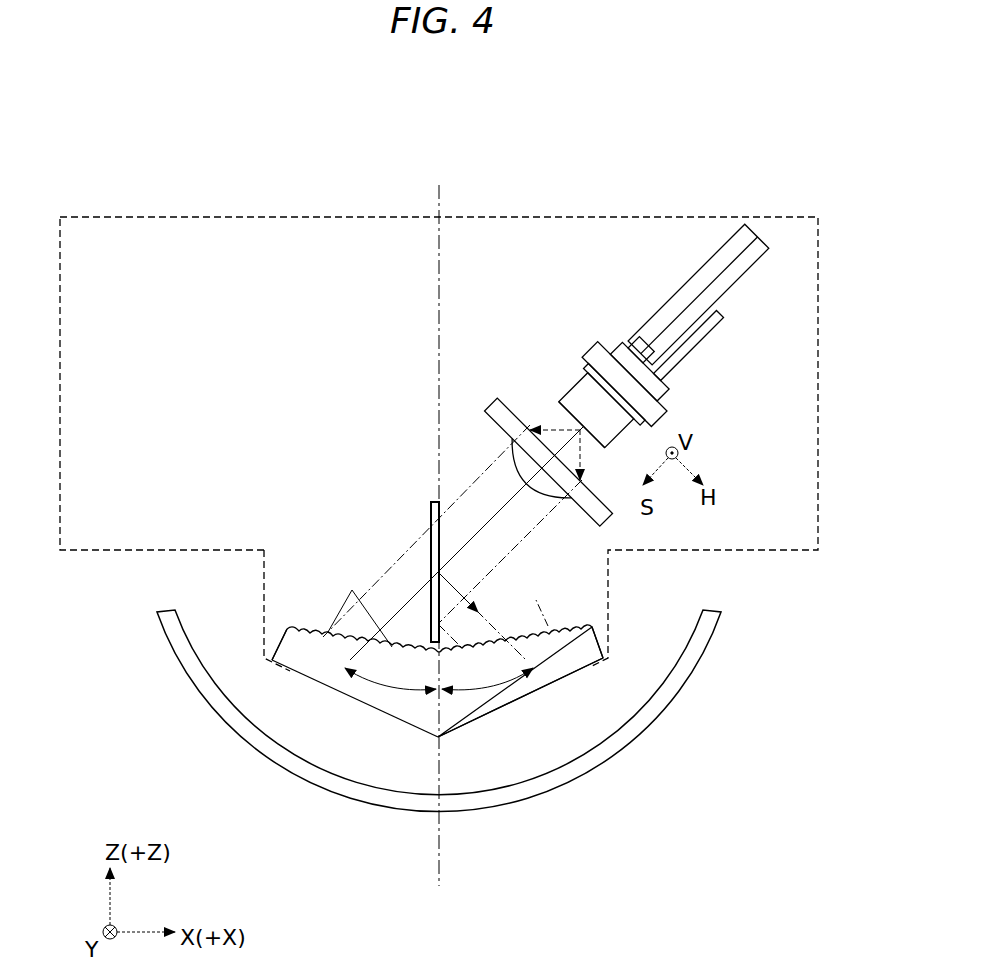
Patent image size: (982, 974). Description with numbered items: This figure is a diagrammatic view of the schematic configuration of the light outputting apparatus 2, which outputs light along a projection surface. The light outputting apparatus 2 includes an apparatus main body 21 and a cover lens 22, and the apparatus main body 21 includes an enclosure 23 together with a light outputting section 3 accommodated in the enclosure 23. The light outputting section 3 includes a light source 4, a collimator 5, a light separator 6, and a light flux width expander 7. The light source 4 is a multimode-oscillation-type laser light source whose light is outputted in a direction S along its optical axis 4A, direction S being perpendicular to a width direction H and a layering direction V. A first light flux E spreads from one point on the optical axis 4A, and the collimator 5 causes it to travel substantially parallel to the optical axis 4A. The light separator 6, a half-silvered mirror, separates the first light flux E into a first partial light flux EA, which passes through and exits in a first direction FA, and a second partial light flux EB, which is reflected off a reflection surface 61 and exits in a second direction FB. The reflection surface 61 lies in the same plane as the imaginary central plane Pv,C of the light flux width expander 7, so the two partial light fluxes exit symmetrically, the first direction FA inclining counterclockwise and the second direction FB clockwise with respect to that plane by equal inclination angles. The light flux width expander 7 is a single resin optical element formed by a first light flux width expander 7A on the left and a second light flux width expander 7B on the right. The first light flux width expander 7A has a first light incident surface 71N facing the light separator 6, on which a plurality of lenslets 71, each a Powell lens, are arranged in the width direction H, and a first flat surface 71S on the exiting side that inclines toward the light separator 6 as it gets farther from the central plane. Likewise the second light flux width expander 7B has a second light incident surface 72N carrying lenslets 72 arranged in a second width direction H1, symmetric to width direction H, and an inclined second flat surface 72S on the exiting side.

The light outputting apparatus 2 is at (747, 168).
The apparatus main body 21 is at (758, 568).
The cover lens 22 is at (703, 650).
The enclosure 23 is at (703, 302).
The light outputting section 3 is at (364, 446).
The light source 4 is at (619, 389).
The optical axis 4A is at (582, 425).
The collimator 5 is at (541, 470).
The light separator 6 is at (436, 533).
The reflection surface 61 is at (440, 506).
The light flux width expander 7 is at (469, 654).
The lenslets 71 is at (362, 638).
The lenslets 72 is at (494, 640).
The first light incident surface 71N is at (343, 612).
The second light incident surface 72N is at (548, 625).
The first flat surface 71S is at (361, 697).
The second flat surface 72S is at (521, 694).
The first light flux width expander 7A is at (308, 669).
The second light flux width expander 7B is at (570, 674).
The first light flux E is at (496, 450).
The first partial light flux EA is at (381, 565).
The second partial light flux EB is at (549, 513).
The first direction FA is at (410, 597).
The second direction FB is at (536, 607).
The second width direction H1 is at (470, 575).
The imaginary central plane Pv,C is at (438, 840).